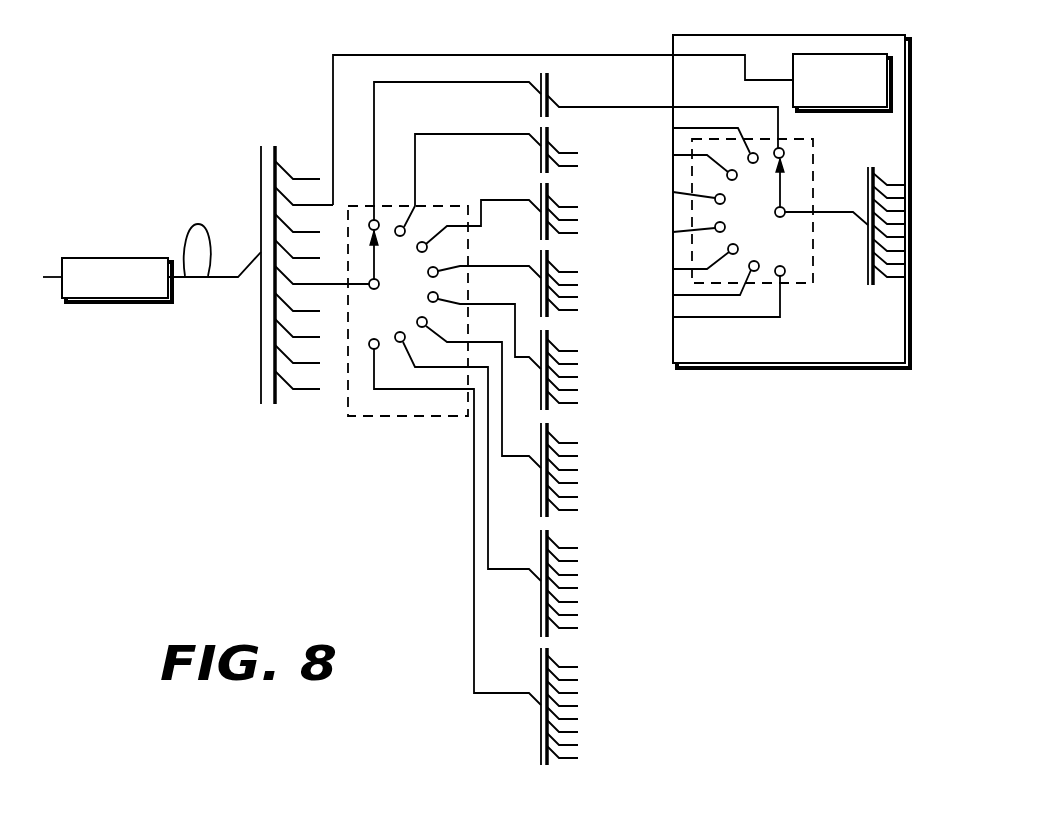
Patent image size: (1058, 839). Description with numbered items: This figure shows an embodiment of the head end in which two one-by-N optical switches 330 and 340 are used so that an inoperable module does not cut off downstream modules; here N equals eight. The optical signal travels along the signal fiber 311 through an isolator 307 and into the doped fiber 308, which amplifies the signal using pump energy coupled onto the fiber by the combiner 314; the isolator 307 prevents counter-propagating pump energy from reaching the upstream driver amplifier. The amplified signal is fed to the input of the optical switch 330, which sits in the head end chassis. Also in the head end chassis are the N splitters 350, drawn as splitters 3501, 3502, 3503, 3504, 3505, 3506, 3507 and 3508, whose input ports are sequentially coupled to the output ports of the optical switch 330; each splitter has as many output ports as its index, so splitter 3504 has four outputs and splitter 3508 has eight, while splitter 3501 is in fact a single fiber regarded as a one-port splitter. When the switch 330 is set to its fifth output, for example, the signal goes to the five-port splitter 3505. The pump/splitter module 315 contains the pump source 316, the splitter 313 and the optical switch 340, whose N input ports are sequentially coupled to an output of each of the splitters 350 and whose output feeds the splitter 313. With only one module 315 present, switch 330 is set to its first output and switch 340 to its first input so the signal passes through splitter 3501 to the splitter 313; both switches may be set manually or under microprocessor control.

The isolator 307 is at (145, 302).
The doped fiber 308 is at (189, 226).
The signal fiber 311 is at (222, 278).
The splitter 313 is at (867, 268).
The combiner 314 is at (261, 188).
The pump/splitter module 315 is at (787, 368).
The pump source 316 is at (840, 112).
The optical switch 330 is at (388, 418).
The optical switch 340 is at (815, 193).
The splitters 350 is at (523, 411).
The splitter 3501 is at (540, 102).
The splitter 3502 is at (540, 165).
The splitter 3503 is at (540, 192).
The splitter 3504 is at (540, 257).
The splitter 3505 is at (570, 348).
The splitter 3506 is at (575, 440).
The splitter 3507 is at (540, 617).
The splitter 3508 is at (540, 747).